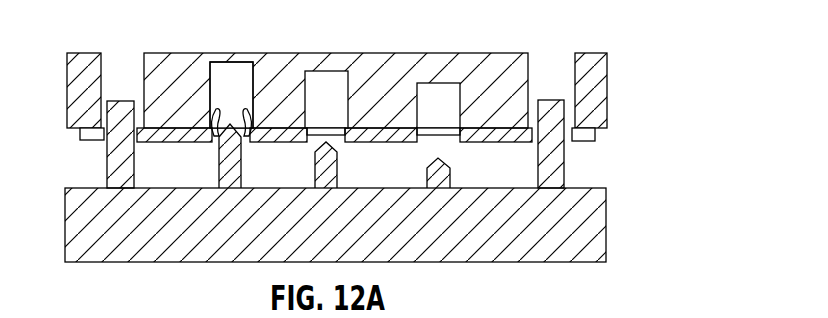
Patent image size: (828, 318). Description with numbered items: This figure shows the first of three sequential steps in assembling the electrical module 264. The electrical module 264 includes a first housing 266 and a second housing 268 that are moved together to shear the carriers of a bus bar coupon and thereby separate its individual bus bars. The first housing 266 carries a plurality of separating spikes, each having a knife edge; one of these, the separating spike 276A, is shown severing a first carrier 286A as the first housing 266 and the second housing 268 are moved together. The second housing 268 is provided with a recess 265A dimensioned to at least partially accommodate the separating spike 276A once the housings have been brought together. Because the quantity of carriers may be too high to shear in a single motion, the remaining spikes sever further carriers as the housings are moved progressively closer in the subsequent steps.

The electrical module 264 is at (648, 76).
The first housing 266 is at (85, 235).
The second housing 268 is at (173, 76).
The recess 265A is at (228, 78).
The separating spike 276A is at (232, 183).
The first carrier 286A is at (203, 113).